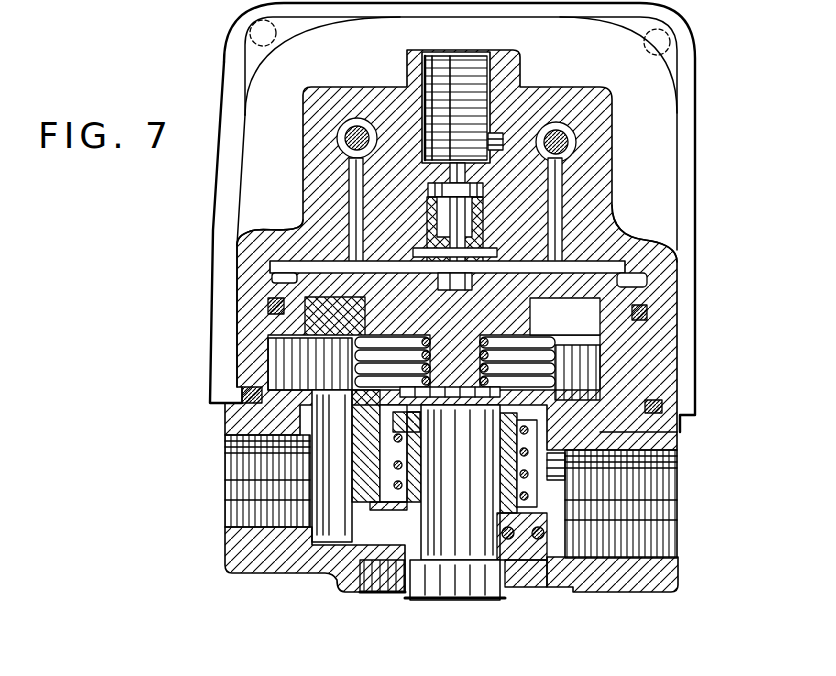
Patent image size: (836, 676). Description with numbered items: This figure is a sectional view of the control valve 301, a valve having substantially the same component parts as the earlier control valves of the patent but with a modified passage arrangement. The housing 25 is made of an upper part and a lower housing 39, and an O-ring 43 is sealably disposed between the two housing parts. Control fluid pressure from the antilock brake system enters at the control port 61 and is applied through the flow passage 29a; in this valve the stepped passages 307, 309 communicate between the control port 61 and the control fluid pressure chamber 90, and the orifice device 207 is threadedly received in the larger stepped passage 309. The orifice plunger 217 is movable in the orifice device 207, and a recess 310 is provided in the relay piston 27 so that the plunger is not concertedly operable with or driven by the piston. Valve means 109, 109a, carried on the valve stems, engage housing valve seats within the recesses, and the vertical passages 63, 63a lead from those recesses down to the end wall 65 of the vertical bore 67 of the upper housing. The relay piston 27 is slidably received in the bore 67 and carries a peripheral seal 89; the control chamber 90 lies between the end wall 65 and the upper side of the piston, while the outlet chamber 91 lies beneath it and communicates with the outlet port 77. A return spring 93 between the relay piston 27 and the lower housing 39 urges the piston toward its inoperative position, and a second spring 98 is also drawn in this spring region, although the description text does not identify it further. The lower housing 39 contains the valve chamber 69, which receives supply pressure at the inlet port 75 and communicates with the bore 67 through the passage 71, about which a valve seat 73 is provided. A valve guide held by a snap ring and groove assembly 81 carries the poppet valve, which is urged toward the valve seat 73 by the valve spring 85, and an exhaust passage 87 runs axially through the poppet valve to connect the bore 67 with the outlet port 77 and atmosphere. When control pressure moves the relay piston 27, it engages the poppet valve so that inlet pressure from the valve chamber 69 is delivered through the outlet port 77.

The control valve 301 is at (208, 104).
The housing 25 is at (206, 343).
The control port 61 is at (466, 60).
The valve means 109 is at (358, 118).
The valve means 109a is at (556, 122).
The flow passage 29a is at (517, 100).
The vertical passage 63 is at (348, 181).
The vertical passage 63a is at (563, 214).
The stepped passage 307 is at (467, 172).
The stepped passage 309 is at (423, 222).
The orifice plunger 217 is at (427, 235).
The recess 310 is at (440, 274).
The orifice device 207 is at (483, 266).
The control fluid pressure chamber 90 is at (262, 233).
The end wall 65 is at (672, 242).
The peripheral seal 89 is at (267, 306).
The O-ring 43 is at (242, 406).
The vertical bore 67 is at (268, 374).
The relay piston 27 is at (603, 314).
The outlet chamber 91 is at (320, 372).
The return spring 93 is at (543, 356).
The spring 98 is at (540, 372).
The passage 71 is at (500, 394).
The valve seat 73 is at (497, 430).
The valve spring 85 is at (497, 490).
The exhaust passage 87 is at (500, 550).
The snap ring and groove assembly 81 is at (357, 594).
The lower housing 39 is at (236, 558).
The outlet port 77 is at (262, 505).
The inlet port 75 is at (650, 542).
The valve chamber 69 is at (680, 432).